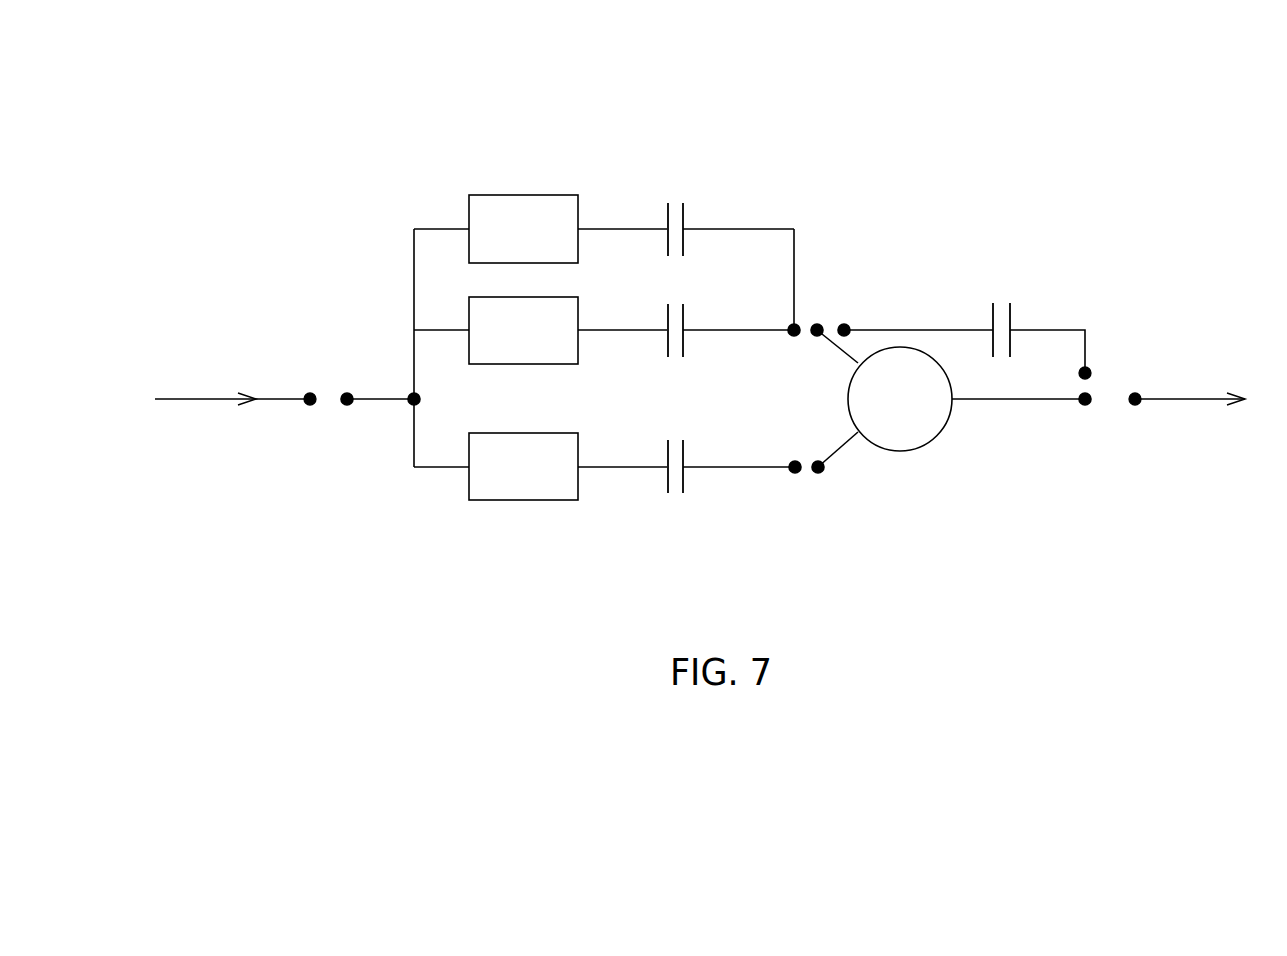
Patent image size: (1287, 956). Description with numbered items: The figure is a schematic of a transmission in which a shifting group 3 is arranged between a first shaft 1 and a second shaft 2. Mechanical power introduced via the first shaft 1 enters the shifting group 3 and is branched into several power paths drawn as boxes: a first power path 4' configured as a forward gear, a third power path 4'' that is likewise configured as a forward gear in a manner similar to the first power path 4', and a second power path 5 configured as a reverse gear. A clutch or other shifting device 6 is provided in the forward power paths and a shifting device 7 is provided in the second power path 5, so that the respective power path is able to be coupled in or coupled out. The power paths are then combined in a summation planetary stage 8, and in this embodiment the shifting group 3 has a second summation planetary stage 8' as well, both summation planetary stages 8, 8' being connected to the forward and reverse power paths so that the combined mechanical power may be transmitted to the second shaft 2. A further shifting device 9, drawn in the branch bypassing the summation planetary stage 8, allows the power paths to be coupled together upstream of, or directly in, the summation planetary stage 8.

The first shaft 1 is at (215, 399).
The second shaft 2 is at (1183, 399).
The shifting group 3 is at (897, 108).
The first power path 4' is at (540, 311).
The third power path 4'' is at (540, 209).
The second power path 5 is at (446, 467).
The shifting device 6 is at (667, 215).
The shifting device 7 is at (667, 485).
The summation planetary stage 8 is at (900, 437).
The second summation planetary stage 8' is at (1009, 451).
The shifting device 9 is at (992, 305).